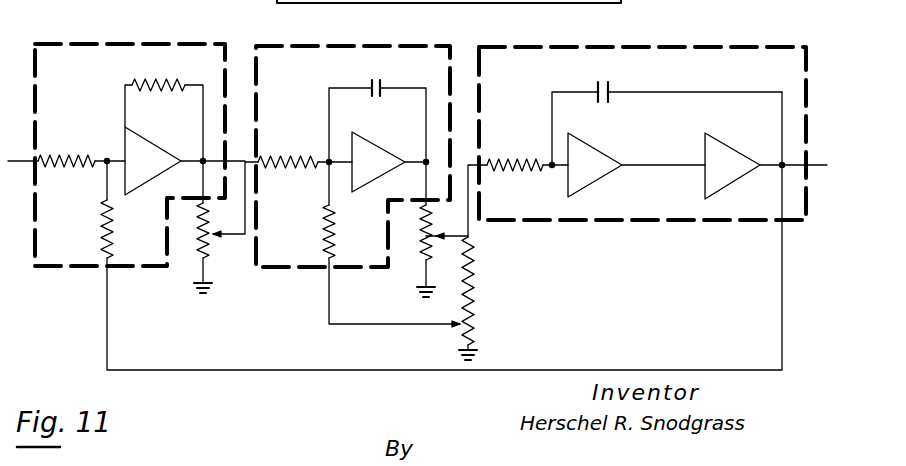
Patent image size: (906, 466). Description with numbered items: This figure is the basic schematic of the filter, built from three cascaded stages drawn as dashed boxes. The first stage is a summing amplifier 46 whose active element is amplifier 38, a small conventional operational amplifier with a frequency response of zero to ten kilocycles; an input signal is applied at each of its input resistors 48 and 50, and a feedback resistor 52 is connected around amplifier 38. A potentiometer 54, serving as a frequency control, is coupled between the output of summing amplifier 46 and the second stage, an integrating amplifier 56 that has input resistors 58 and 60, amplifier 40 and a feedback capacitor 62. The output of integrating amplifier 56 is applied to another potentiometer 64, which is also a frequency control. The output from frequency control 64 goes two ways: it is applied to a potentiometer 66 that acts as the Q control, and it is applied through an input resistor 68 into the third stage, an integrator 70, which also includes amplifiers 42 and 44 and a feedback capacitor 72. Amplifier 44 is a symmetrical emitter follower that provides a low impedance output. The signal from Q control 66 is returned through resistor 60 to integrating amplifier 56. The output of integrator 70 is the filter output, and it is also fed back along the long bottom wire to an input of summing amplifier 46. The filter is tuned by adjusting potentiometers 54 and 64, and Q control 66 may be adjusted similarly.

The amplifier 38 is at (150, 146).
The amplifier 40 is at (376, 142).
The amplifier 42 is at (596, 143).
The amplifier 44 is at (731, 146).
The summing amplifier 46 is at (172, 42).
The input resistor 48 is at (62, 158).
The input resistor 50 is at (104, 222).
The feedback resistor 52 is at (173, 85).
The potentiometer 54 is at (205, 238).
The integrating amplifier 56 is at (388, 45).
The input resistor 58 is at (284, 159).
The input resistor 60 is at (326, 222).
The feedback capacitor 62 is at (384, 88).
The potentiometer 64 is at (428, 240).
The potentiometer 66 is at (472, 314).
The input resistor 68 is at (508, 160).
The integrator 70 is at (644, 46).
The feedback capacitor 72 is at (612, 92).